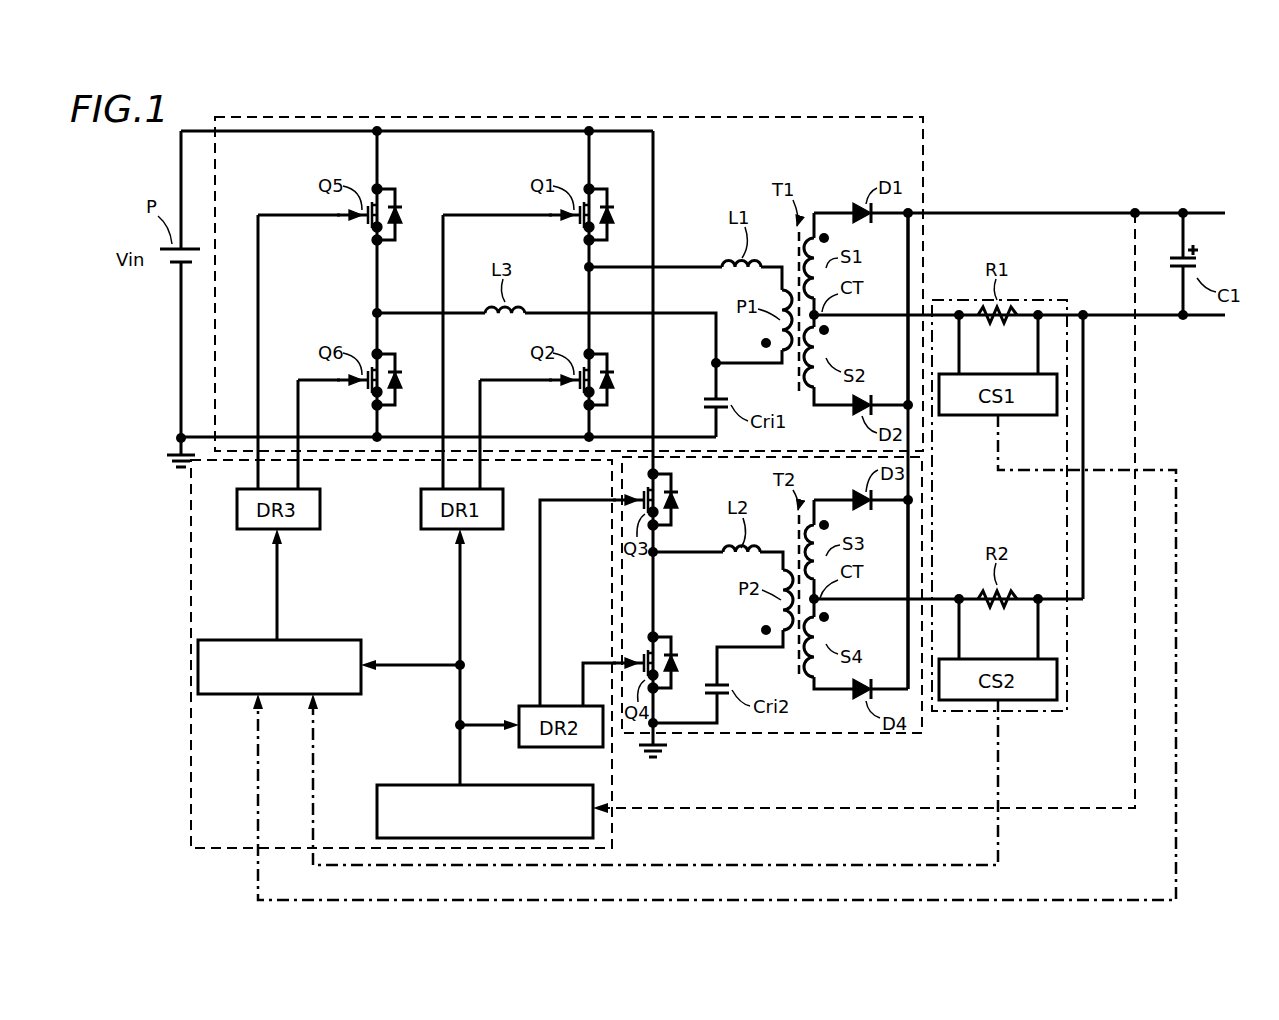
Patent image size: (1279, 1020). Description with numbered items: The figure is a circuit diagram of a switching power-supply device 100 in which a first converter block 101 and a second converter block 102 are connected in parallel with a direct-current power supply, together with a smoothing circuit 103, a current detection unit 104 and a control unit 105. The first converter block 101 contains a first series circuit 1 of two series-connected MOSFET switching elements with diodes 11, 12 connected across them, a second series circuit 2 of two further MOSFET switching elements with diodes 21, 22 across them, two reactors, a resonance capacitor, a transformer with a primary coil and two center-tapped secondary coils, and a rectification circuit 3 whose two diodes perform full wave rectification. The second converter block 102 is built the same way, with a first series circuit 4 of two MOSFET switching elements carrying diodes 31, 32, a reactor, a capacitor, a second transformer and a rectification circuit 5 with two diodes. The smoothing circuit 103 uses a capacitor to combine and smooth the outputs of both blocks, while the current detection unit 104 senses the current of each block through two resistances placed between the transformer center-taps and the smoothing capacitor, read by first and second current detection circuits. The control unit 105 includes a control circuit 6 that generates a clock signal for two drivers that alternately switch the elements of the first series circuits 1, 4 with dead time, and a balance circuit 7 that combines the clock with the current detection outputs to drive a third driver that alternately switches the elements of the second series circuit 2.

The first series circuit 1 is at (582, 175).
The second series circuit 2 is at (370, 175).
The rectification circuit 3 is at (853, 203).
The first series circuit 4 is at (670, 712).
The rectification circuit 5 is at (848, 708).
The control circuit 6 is at (406, 785).
The balance circuit 7 is at (226, 640).
The diode 11 is at (609, 197).
The diode 12 is at (606, 362).
The diode 21 is at (397, 197).
The diode 22 is at (397, 362).
The diode 31 is at (679, 496).
The diode 32 is at (679, 659).
The switching power-supply device 100 is at (1270, 118).
The first converter block 101 is at (930, 133).
The second converter block 102 is at (903, 742).
The smoothing circuit 103 is at (1200, 206).
The current detection unit 104 is at (1054, 722).
The control unit 105 is at (188, 806).